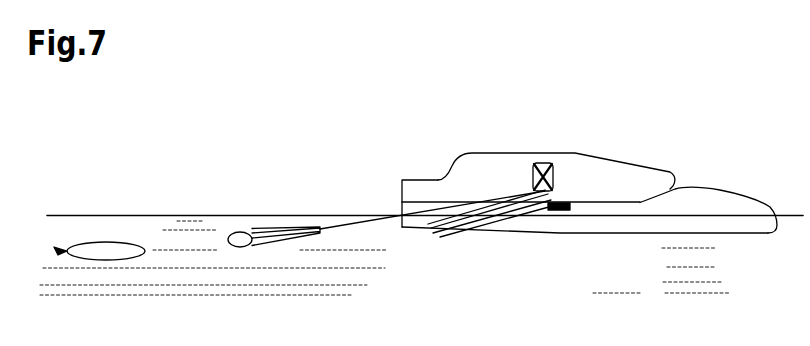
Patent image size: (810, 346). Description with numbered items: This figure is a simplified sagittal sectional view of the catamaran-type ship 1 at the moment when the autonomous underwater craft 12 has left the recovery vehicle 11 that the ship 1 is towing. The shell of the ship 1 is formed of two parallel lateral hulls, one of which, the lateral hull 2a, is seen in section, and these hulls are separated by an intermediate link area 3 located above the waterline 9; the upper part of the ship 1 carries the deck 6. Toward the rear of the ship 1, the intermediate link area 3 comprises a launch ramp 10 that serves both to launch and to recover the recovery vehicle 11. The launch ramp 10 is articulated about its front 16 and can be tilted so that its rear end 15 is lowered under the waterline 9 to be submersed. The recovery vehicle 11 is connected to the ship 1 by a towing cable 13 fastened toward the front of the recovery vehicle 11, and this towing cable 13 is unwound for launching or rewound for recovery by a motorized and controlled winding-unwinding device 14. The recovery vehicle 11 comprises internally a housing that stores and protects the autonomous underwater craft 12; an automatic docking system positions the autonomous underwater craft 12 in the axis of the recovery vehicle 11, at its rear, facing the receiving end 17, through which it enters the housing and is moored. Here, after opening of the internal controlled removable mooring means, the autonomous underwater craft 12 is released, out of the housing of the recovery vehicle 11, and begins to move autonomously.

The ship 1 is at (630, 145).
The lateral hull 2a is at (729, 231).
The intermediate link area 3 is at (597, 203).
The deck 6 is at (668, 170).
The waterline 9 is at (788, 212).
The launch ramp 10 is at (445, 233).
The recovery vehicle 11 is at (285, 222).
The autonomous underwater craft 12 is at (111, 250).
The towing cable 13 is at (335, 226).
The winding-unwinding device 14 is at (546, 162).
The rear end of the launch ramp 15 is at (417, 230).
The front of the launch ramp 16 is at (572, 209).
The receiving end 17 is at (227, 232).